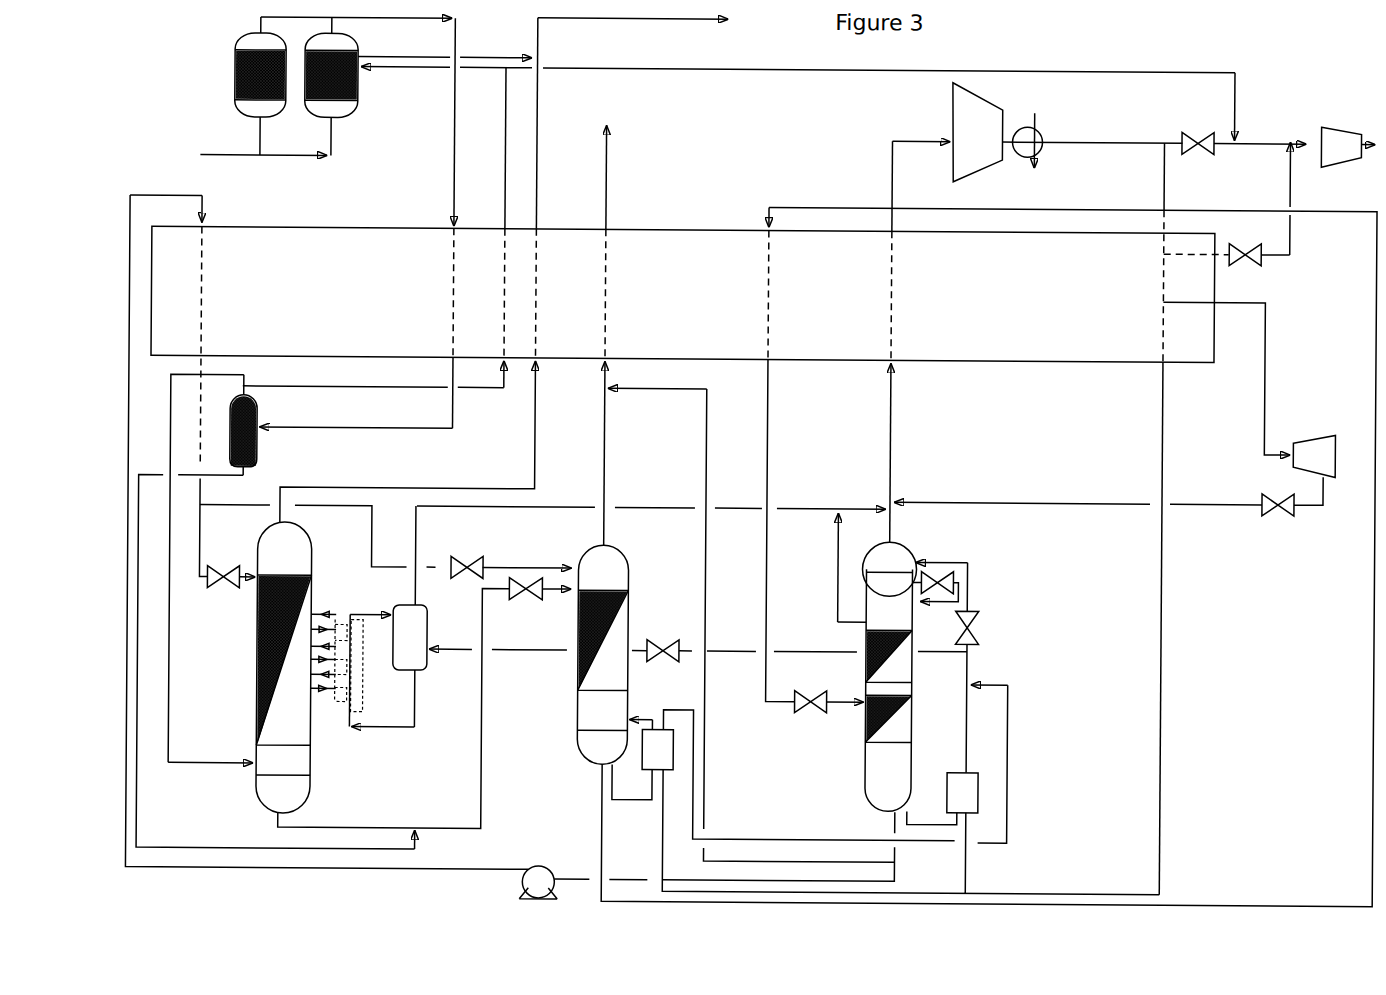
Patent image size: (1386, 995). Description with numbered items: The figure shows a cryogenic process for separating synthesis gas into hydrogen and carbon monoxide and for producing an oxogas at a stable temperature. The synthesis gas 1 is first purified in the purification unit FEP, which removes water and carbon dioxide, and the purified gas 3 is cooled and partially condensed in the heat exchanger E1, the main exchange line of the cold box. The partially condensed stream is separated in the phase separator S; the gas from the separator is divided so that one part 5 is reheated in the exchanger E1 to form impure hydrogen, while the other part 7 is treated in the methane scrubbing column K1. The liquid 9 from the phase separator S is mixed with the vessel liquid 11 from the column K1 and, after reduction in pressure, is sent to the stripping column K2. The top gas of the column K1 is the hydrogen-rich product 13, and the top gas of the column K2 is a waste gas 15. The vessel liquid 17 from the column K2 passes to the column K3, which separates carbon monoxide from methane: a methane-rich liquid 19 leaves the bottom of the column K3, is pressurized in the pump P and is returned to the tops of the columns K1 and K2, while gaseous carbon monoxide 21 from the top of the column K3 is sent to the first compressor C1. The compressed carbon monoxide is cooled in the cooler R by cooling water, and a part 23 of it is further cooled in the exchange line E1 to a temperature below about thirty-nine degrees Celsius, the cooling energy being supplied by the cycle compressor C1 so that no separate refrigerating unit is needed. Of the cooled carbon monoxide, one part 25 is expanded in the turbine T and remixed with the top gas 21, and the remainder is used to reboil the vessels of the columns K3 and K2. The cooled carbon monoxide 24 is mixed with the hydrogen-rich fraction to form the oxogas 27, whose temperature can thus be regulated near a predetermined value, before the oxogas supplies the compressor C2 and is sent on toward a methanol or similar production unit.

The synthesis gas 1 is at (233, 141).
The purified gas 3 is at (452, 174).
The part of the gas from the phase separator 5 is at (370, 390).
The other part of the gas from the phase separator 7 is at (164, 409).
The liquid from the phase separator 9 is at (139, 617).
The vessel liquid from the column K1 11 is at (277, 821).
The hydrogen-rich product 13 is at (391, 490).
The waste gas 15 is at (606, 462).
The vessel liquid from the column K2 17 is at (600, 821).
The methane-rich liquid 19 is at (902, 873).
The gaseous carbon monoxide 21 is at (892, 433).
The part of the compressed carbon monoxide 23 is at (1158, 182).
The cooled carbon monoxide 24 is at (1222, 136).
The part reduced in pressure in the turbine 25 is at (1267, 354).
The oxogas 27 is at (1253, 136).
The heat exchanger E1 is at (178, 244).
The purification unit FEP is at (349, 97).
The phase separator S is at (257, 453).
The methane scrubbing column K1 is at (259, 675).
The stripping column K2 is at (579, 719).
The column K3 is at (865, 757).
The first compressor C1 is at (947, 120).
The compressor C2 is at (1342, 136).
The heat exchanger R is at (1042, 148).
The turbine T is at (1312, 446).
The pump P is at (537, 867).